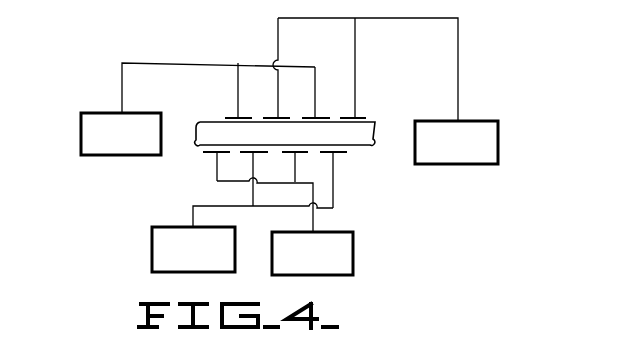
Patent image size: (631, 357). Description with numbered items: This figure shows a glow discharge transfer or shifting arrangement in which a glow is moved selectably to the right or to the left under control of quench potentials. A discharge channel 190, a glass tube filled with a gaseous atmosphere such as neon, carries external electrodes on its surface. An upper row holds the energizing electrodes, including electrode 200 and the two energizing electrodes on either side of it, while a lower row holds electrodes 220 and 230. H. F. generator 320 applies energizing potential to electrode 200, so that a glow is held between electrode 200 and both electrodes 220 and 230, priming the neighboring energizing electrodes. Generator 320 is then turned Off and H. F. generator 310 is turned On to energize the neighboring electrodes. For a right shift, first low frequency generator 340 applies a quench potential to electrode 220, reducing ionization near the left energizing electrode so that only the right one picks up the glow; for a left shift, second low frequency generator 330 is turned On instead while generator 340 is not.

The discharge channel 190 is at (377, 126).
The electrode 200 is at (268, 117).
The electrode 220 is at (241, 153).
The electrode 230 is at (306, 153).
The H. F. generator 310 is at (79, 121).
The H. F. generator 320 is at (498, 136).
The second low frequency generator 330 is at (353, 245).
The first low frequency generator 340 is at (152, 237).